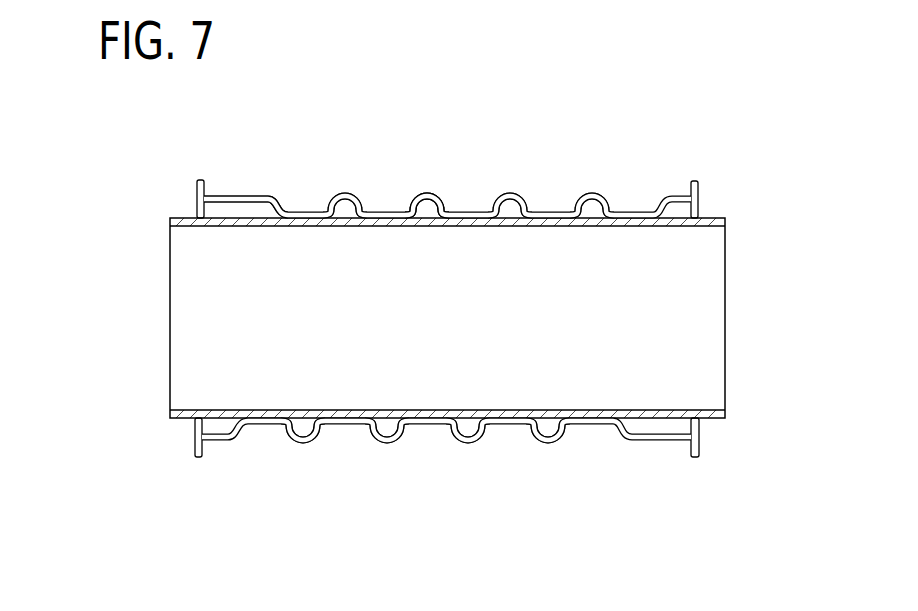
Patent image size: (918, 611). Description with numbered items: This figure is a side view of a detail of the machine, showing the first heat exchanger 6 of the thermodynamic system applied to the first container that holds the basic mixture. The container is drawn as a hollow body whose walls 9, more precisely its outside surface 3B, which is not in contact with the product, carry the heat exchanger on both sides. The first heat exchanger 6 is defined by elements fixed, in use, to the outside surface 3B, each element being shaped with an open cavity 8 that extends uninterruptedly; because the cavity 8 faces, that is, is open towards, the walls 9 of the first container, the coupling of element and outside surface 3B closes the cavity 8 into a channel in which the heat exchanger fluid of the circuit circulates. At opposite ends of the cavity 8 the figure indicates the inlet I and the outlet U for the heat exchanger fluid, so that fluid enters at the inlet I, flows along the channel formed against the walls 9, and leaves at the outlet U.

The first heat exchanger 6 is at (184, 196).
The walls 9 is at (245, 206).
The open cavity 8 is at (419, 194).
The outside surface 3B is at (429, 192).
The inlet I is at (674, 182).
The outlet U is at (216, 462).